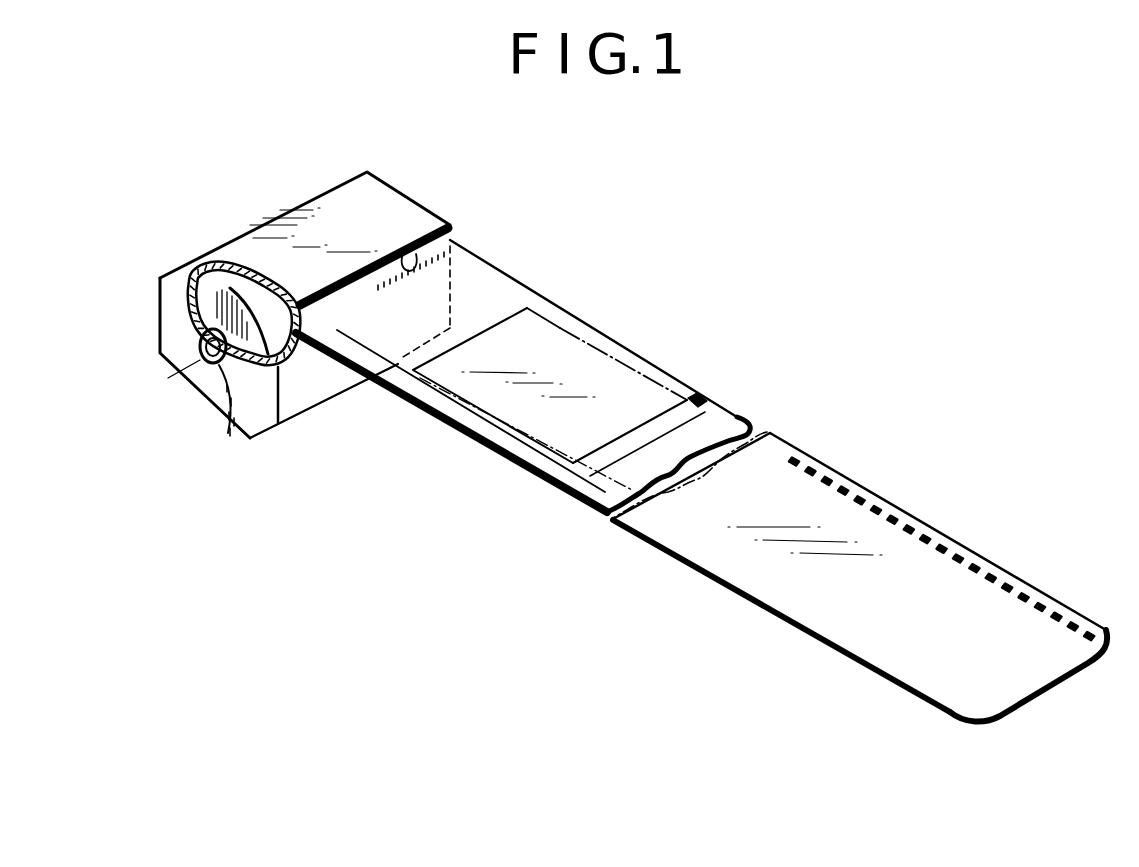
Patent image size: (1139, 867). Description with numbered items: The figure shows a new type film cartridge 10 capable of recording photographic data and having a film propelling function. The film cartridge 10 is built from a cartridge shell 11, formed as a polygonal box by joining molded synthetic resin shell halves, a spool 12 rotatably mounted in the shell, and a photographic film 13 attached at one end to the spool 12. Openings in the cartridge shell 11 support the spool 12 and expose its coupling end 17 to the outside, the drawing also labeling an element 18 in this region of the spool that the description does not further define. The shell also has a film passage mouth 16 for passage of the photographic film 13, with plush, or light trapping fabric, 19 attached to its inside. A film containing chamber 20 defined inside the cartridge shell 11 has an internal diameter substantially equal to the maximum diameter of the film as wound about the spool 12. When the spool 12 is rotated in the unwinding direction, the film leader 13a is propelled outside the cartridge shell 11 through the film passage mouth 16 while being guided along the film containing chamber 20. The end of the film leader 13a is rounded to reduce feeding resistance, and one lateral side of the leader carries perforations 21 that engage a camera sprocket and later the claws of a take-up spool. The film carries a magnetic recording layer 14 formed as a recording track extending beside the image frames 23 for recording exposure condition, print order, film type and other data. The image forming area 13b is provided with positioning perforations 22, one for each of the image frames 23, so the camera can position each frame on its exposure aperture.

The film cartridge 10 is at (222, 246).
The cartridge shell 11 is at (200, 397).
The spool 12 is at (198, 354).
The photographic film 13 is at (837, 652).
The film leader 13a is at (1043, 678).
The image forming area 13b is at (553, 372).
The magnetic recording layer 14 is at (450, 423).
The film passage mouth 16 is at (353, 260).
The coupling end 17 is at (222, 418).
The eyelet 18 is at (200, 340).
The plush 19 is at (423, 258).
The film containing chamber 20 is at (241, 258).
The perforations 21 is at (908, 517).
The positioning perforations 22 is at (707, 395).
The image frames 23 is at (643, 357).